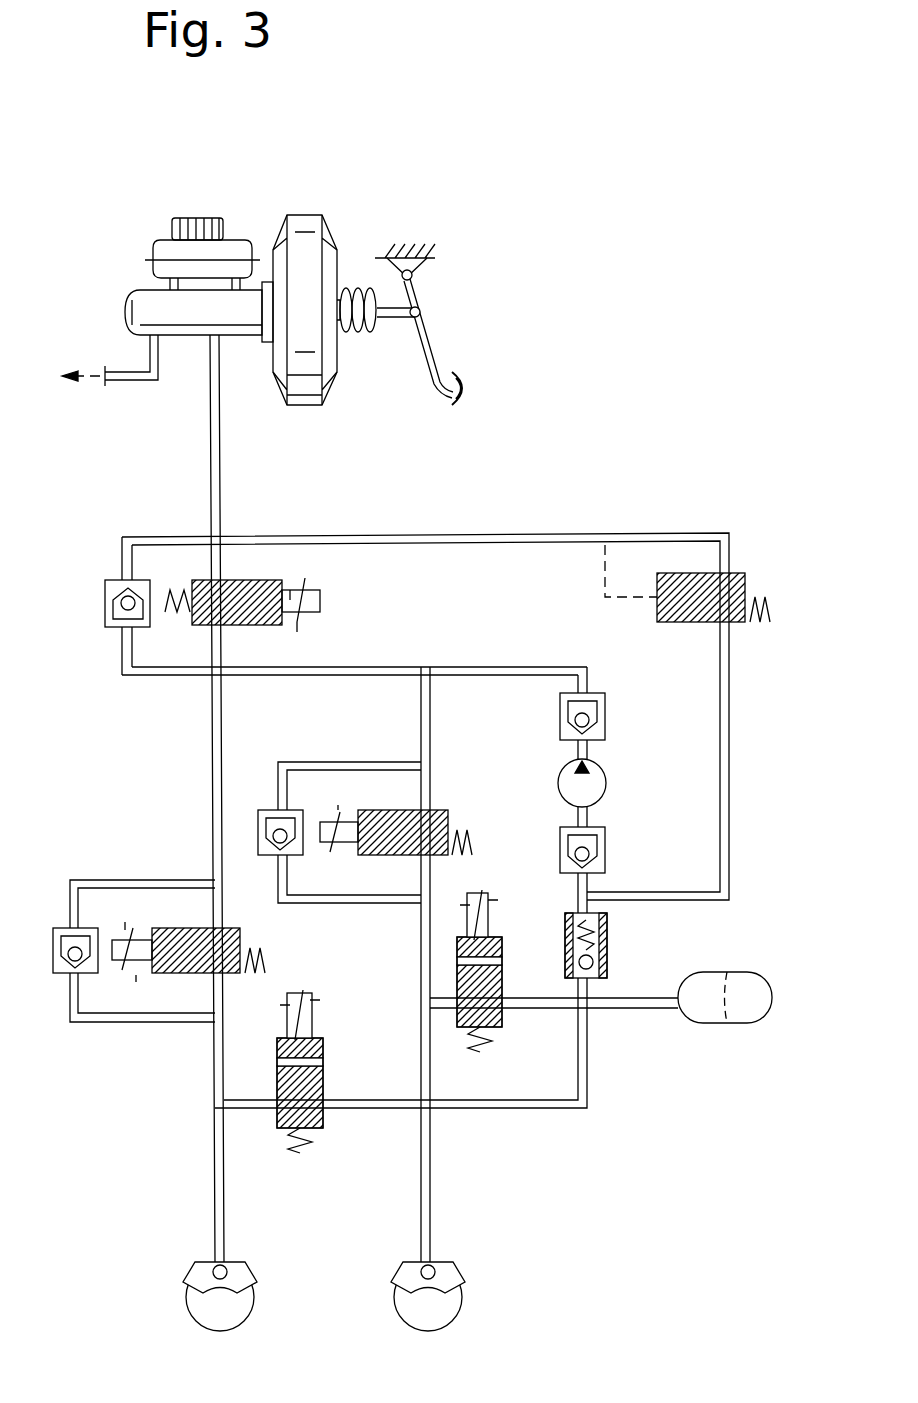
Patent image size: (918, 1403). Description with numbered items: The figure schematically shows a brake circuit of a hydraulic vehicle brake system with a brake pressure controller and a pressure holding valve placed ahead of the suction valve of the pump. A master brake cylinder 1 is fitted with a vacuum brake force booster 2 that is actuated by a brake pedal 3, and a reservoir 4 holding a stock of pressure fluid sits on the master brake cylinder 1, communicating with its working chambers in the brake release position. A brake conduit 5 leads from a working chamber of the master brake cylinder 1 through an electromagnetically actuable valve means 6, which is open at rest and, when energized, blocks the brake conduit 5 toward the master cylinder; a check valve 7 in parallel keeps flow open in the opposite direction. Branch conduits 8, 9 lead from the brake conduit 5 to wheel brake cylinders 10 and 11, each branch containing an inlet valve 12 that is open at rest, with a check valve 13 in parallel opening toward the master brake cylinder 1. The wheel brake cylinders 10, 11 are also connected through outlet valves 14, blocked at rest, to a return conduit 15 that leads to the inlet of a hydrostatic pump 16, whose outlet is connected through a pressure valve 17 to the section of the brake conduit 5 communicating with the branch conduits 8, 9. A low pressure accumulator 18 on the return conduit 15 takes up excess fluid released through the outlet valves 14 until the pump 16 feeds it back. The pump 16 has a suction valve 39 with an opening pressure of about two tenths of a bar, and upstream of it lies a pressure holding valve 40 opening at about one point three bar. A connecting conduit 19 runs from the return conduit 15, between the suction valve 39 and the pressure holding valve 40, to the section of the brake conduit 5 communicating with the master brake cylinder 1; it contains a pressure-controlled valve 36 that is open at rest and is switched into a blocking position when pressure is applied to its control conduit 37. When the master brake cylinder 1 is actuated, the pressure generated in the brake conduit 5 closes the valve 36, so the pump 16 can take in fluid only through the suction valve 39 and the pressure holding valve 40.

The master brake cylinder 1 is at (132, 318).
The vacuum brake force booster 2 is at (312, 247).
The brake pedal 3 is at (440, 374).
The reservoir 4 is at (178, 250).
The brake conduit 5 is at (220, 474).
The electromagnetically actuable valve means 6 is at (285, 583).
The check valve 7 is at (105, 598).
The branch conduit 8 is at (212, 748).
The branch conduit 9 is at (421, 958).
The wheel brake cylinder 10 is at (208, 1266).
The wheel brake cylinder 11 is at (440, 1268).
The inlet valve 12 is at (440, 812).
The check valve 13 is at (268, 812).
The outlet valve 14 is at (323, 1065).
The return conduit 15 is at (490, 1105).
The hydrostatic pump 16 is at (607, 785).
The pressure valve 17 is at (605, 718).
The low pressure accumulator 18 is at (745, 1012).
The connecting conduit 19 is at (482, 537).
The pressure-controlled valve 36 is at (745, 582).
The control conduit 37 is at (600, 581).
The suction valve 39 is at (605, 848).
The pressure holding valve 40 is at (607, 938).